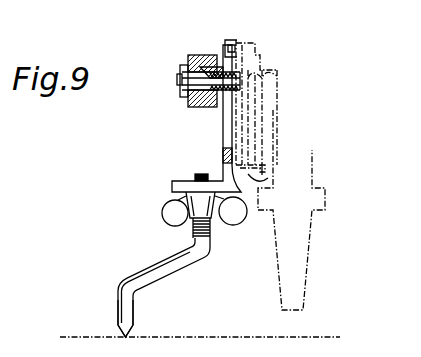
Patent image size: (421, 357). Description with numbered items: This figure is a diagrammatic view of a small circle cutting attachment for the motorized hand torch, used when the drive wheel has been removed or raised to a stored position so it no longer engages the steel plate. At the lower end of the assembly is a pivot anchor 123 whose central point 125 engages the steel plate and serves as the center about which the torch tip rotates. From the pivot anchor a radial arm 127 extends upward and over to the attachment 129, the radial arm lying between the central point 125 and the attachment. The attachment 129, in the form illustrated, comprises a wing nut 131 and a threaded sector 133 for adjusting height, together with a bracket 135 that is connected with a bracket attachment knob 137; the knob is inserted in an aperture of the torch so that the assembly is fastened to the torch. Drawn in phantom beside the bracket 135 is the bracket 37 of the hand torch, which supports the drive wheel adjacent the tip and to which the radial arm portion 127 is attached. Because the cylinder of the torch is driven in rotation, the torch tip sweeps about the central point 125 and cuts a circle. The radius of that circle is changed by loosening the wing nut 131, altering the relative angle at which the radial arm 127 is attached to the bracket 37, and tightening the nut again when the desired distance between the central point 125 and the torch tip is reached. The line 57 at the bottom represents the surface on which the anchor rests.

The bracket attachment knob 137 is at (202, 56).
The attachment 129 is at (194, 116).
The wing nut 131 is at (173, 208).
The threaded sector 133 is at (212, 233).
The radial arm 127 is at (168, 253).
The pivot anchor 123 is at (140, 318).
The central point 125 is at (128, 338).
The surface 57 is at (210, 335).
The bracket 37 is at (268, 178).
The bracket 135 is at (245, 218).